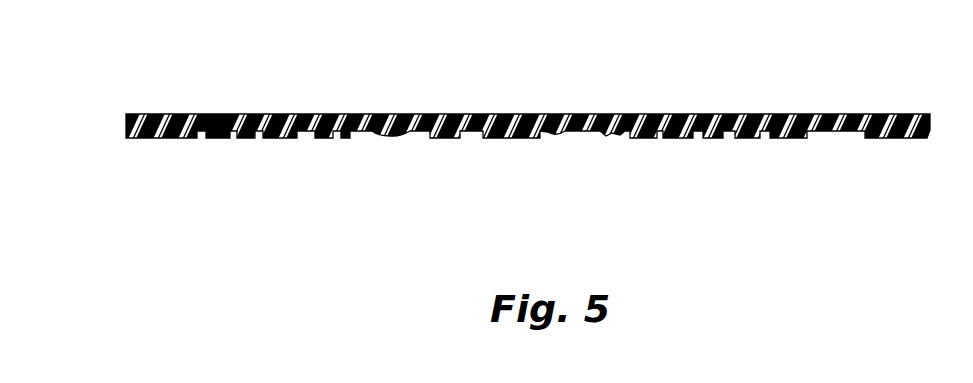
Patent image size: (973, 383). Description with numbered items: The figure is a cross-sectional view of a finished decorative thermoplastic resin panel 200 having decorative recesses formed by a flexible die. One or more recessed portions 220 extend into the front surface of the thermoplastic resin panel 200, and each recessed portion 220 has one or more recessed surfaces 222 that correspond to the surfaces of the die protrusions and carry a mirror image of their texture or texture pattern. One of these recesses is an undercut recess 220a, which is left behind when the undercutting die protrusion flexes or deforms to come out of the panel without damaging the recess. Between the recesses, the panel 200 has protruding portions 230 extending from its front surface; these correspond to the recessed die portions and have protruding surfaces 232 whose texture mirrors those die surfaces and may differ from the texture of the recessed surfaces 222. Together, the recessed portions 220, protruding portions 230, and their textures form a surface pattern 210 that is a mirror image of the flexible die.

The decorative thermoplastic resin panel 200 is at (129, 123).
The undercut recess 220a is at (202, 137).
The surface pattern 210 is at (182, 165).
The recessed portions 220 is at (233, 138).
The recessed surfaces 222 is at (237, 122).
The protruding portions 230 is at (318, 114).
The protruding surfaces 232 is at (318, 114).